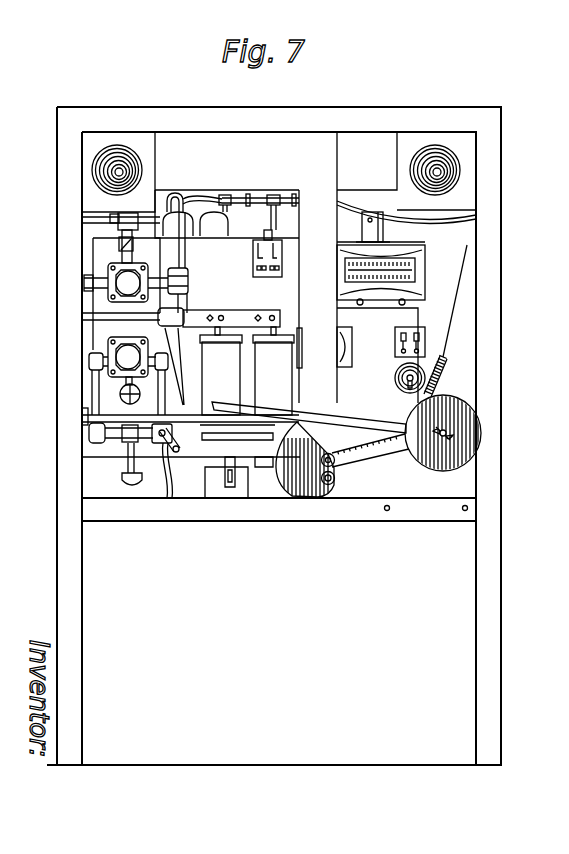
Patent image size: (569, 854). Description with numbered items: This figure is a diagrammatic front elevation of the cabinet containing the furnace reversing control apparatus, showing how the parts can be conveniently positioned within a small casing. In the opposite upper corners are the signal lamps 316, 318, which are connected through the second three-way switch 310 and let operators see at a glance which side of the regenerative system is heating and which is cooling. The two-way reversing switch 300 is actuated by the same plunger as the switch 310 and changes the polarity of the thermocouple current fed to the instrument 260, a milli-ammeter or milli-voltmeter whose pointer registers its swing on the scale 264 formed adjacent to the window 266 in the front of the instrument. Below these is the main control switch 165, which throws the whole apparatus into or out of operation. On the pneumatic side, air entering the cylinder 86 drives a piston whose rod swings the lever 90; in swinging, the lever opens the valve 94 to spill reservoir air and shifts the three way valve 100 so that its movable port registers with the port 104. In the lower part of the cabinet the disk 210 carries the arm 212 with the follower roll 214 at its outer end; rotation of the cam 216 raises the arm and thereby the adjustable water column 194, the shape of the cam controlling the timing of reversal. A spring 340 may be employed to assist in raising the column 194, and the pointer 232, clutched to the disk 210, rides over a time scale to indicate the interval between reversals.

The signal lamp 316 is at (117, 158).
The signal lamp 318 is at (436, 155).
The two-way reversing switch 300 is at (188, 222).
The second three-way switch 310 is at (218, 218).
The instrument 260 is at (363, 225).
The scale 264 is at (397, 257).
The window 266 is at (402, 268).
The three way valve 100 is at (83, 274).
The lever 90 is at (203, 310).
The valve 94 is at (88, 356).
The port 104 is at (221, 371).
The cylinder 86 is at (273, 371).
The switch 165 is at (404, 366).
The spring 340 is at (445, 367).
The pointer 232 is at (362, 413).
The adjustable column 194 is at (82, 427).
The follower roll 214 is at (328, 453).
The disk 210 is at (474, 427).
The arm 212 is at (382, 455).
The cam 216 is at (297, 480).